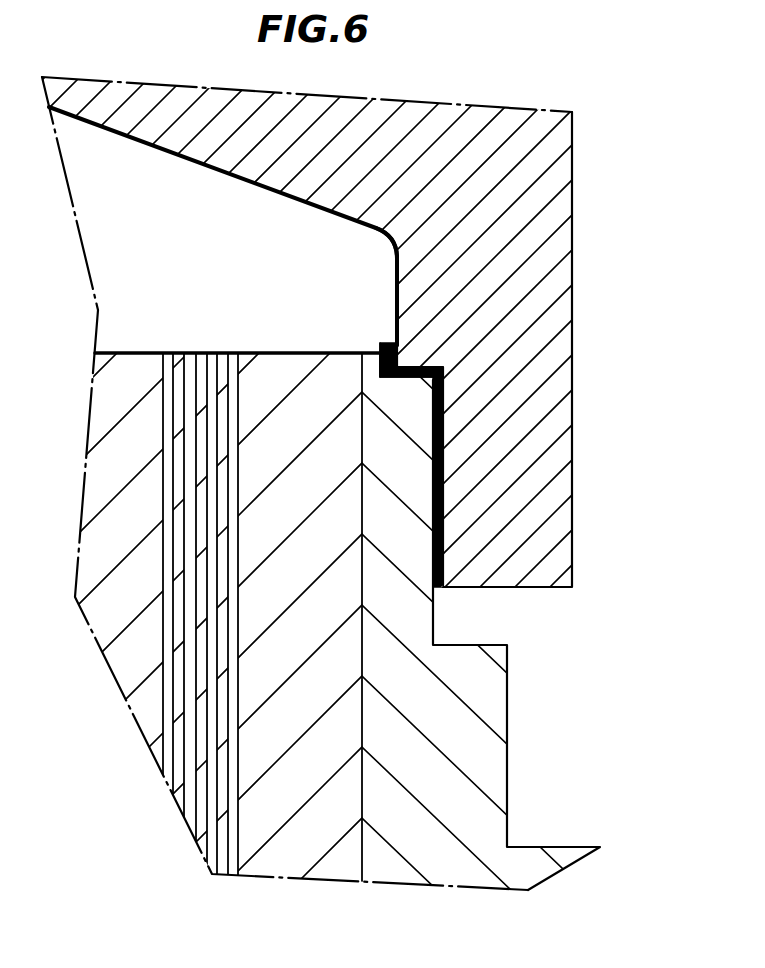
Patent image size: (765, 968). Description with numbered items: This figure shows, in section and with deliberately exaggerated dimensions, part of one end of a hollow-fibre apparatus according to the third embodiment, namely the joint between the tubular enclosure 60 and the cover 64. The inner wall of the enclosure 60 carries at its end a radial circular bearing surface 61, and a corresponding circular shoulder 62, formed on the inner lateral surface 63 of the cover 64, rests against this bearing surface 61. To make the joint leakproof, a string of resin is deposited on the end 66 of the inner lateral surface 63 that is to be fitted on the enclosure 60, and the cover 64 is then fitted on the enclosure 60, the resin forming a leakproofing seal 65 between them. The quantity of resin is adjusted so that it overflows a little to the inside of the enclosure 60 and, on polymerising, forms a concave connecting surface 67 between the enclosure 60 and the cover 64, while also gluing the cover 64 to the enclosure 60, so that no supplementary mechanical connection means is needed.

The tubular enclosure 60 is at (485, 767).
The radial circular bearing surface 61 is at (395, 379).
The circular shoulder 62 is at (417, 367).
The inner lateral surface 63 is at (443, 427).
The cover 64 is at (558, 168).
The leakproofing seal 65 is at (398, 337).
The end of the inner lateral surface 66 is at (447, 540).
The concave connecting surface 67 is at (386, 344).